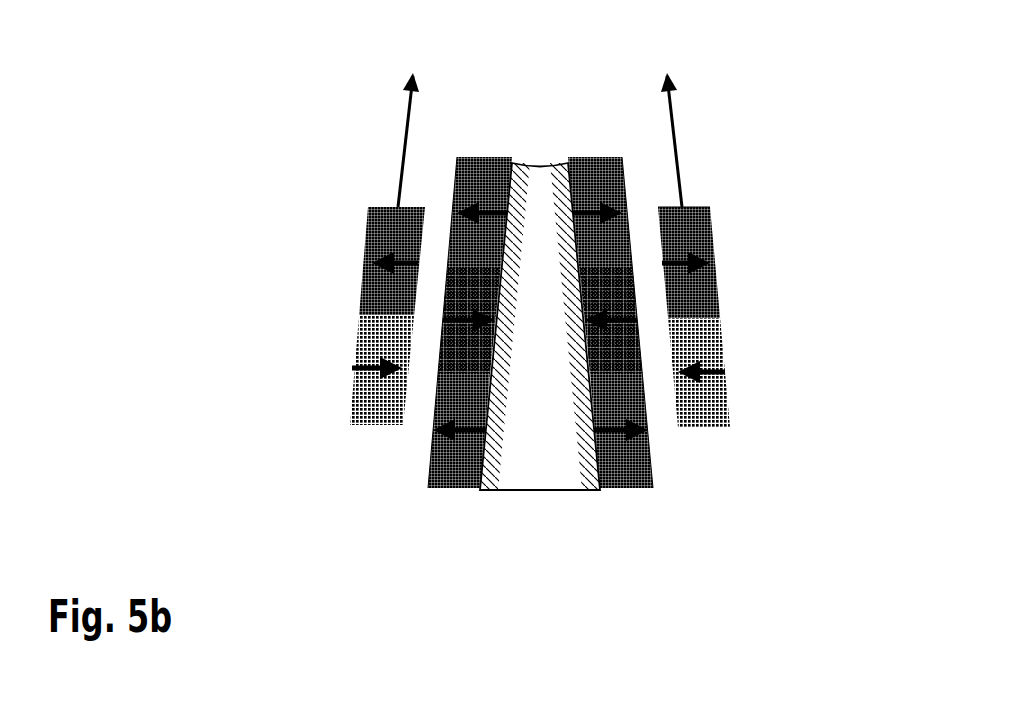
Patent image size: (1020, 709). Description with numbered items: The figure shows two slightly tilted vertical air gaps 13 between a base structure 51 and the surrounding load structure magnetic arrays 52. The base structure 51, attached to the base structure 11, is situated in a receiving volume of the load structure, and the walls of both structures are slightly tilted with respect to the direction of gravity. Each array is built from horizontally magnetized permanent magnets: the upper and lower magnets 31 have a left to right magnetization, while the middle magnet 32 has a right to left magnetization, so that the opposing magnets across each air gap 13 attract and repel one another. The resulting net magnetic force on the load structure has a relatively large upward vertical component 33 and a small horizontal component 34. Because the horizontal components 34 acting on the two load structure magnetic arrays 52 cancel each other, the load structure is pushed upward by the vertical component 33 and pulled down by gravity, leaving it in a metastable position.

The base structure 11 is at (540, 490).
The vertical air gaps 13 is at (415, 410).
The permanent magnets with left to right magnetization 31 is at (598, 158).
The permanent magnet with right to left magnetization 32 is at (355, 353).
The vertical component of the net magnetic force 33 is at (675, 117).
The horizontal component of the net magnetic force 34 is at (690, 207).
The base structure 51 is at (493, 138).
The load structure magnetic arrays 52 is at (335, 431).